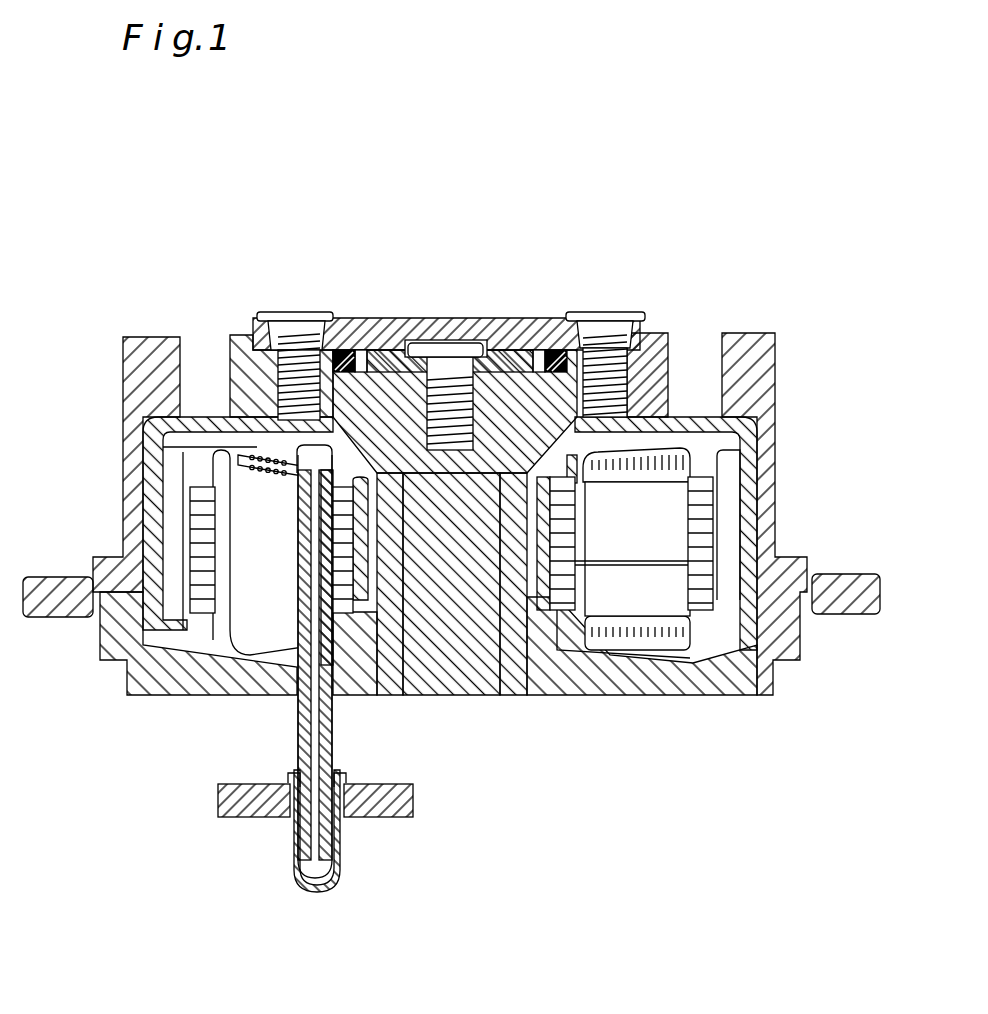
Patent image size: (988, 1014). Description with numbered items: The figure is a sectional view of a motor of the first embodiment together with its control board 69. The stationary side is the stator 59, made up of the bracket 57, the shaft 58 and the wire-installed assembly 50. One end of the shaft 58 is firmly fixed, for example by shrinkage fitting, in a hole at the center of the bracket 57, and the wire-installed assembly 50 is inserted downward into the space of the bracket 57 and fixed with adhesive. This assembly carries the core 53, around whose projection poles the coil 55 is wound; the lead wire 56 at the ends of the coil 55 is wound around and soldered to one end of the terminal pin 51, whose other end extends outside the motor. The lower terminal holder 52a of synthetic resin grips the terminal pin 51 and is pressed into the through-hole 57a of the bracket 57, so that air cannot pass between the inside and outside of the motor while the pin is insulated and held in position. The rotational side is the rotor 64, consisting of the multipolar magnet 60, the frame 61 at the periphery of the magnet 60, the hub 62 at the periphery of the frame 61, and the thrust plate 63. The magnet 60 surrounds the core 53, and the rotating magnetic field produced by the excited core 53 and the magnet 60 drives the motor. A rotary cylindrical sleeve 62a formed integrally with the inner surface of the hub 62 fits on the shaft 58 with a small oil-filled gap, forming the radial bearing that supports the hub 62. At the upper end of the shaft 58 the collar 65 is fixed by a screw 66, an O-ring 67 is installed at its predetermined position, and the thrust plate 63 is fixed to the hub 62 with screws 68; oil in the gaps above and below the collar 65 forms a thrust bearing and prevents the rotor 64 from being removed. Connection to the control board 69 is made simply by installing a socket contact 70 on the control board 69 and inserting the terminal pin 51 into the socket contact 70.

The wire-installed assembly 50 is at (676, 642).
The terminal pin 51 is at (313, 735).
The lower terminal holder 52a is at (326, 698).
The core 53 is at (212, 640).
The coil 55 is at (240, 650).
The lead wire 56 is at (257, 448).
The bracket 57 is at (625, 692).
The through-hole 57a is at (290, 697).
The shaft 58 is at (497, 692).
The stator 59 is at (727, 920).
The multipolar magnet 60 is at (727, 450).
The frame 61 is at (740, 413).
The hub 62 is at (762, 340).
The sleeve 62a is at (402, 697).
The thrust plate 63 is at (547, 320).
The rotor 64 is at (768, 162).
The collar 65 is at (510, 322).
The screw 66 is at (440, 352).
The O-ring 67 is at (347, 320).
The screws 68 is at (287, 310).
The control board 69 is at (413, 815).
The socket contact 70 is at (338, 833).